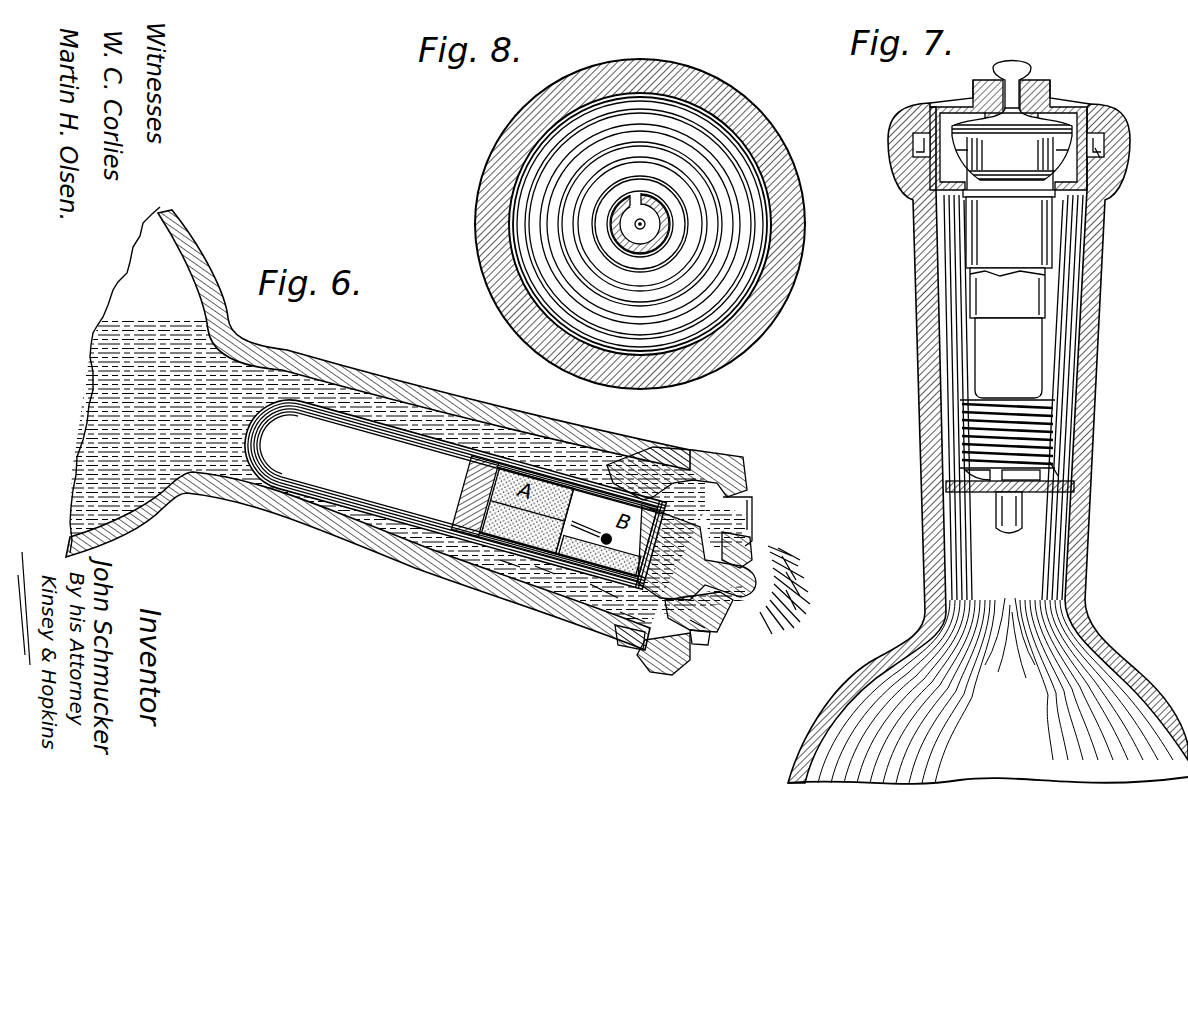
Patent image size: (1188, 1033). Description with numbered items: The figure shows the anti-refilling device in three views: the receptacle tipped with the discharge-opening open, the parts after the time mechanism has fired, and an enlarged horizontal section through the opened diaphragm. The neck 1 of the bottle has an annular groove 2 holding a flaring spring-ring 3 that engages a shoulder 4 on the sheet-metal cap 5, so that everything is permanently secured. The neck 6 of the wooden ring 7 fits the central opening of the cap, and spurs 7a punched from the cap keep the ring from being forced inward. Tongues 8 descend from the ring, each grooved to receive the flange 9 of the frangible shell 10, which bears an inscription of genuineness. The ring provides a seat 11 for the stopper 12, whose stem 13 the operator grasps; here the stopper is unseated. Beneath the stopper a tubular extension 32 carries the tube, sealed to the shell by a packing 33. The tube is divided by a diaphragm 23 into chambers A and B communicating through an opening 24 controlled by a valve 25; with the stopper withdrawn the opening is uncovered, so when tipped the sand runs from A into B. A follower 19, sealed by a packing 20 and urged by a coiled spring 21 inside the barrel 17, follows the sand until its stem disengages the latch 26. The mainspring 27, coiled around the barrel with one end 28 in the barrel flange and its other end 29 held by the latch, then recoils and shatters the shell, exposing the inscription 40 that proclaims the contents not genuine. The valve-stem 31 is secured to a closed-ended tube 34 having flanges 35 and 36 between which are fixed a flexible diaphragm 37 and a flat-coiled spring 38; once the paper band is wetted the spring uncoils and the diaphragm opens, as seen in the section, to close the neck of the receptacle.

In FIG. 8, the neck 1 is at (737, 340).
In FIG. 7, the neck 1 is at (1102, 205).
In FIG. 6, the neck 1 is at (594, 456).
In FIG. 7, the annular groove 2 is at (1106, 150).
In FIG. 6, the annular groove 2 is at (620, 620).
In FIG. 7, the spring-ring 3 is at (1106, 143).
In FIG. 6, the spring-ring 3 is at (658, 657).
In FIG. 7, the shoulder 4 is at (1100, 160).
In FIG. 6, the shoulder 4 is at (690, 624).
In FIG. 6, the cap 5 is at (703, 644).
In FIG. 7, the neck of ring 6 is at (975, 80).
In FIG. 6, the neck of ring 6 is at (753, 540).
In FIG. 7, the ring 7 is at (1088, 104).
In FIG. 6, the ring 7 is at (716, 620).
In FIG. 7, the spurs 7a is at (1115, 112).
In FIG. 6, the spurs 7a is at (632, 642).
In FIG. 7, the tongues 8 is at (930, 213).
In FIG. 6, the tongues 8 is at (632, 468).
In FIG. 7, the flange 9 is at (999, 188).
In FIG. 6, the flange 9 is at (612, 612).
In FIG. 7, the shell 10 is at (1009, 232).
In FIG. 6, the shell 10 is at (454, 478).
In FIG. 7, the seat 11 is at (1040, 118).
In FIG. 6, the seat 11 is at (748, 512).
In FIG. 7, the stopper 12 is at (1004, 138).
In FIG. 6, the stopper 12 is at (697, 552).
In FIG. 7, the stem 13 is at (1016, 68).
In FIG. 6, the stem 13 is at (760, 577).
In FIG. 7, the barrel 17 is at (960, 444).
In FIG. 6, the follower 19 is at (432, 545).
In FIG. 6, the packing 20 is at (456, 555).
In FIG. 6, the coiled spring 21 is at (527, 511).
In FIG. 6, the diaphragm 23 is at (564, 522).
In FIG. 6, the opening 24 is at (588, 521).
In FIG. 6, the valve 25 is at (601, 549).
In FIG. 7, the latch 26 is at (1060, 474).
In FIG. 7, the mainspring 27 is at (1052, 422).
In FIG. 7, the end of mainspring 28 is at (975, 401).
In FIG. 7, the end of mainspring 29 is at (1062, 462).
In FIG. 8, the valve-stem 31 is at (637, 226).
In FIG. 6, the valve-stem 31 is at (516, 572).
In FIG. 7, the tubular extension 32 is at (1007, 293).
In FIG. 6, the tubular extension 32 is at (554, 518).
In FIG. 6, the packing 33 is at (546, 576).
In FIG. 8, the tube 34 is at (626, 250).
In FIG. 7, the tube 34 is at (1006, 524).
In FIG. 7, the flange 35 is at (997, 496).
In FIG. 7, the flange 36 is at (969, 466).
In FIG. 8, the flexible diaphragm 37 is at (630, 343).
In FIG. 7, the flexible diaphragm 37 is at (1090, 481).
In FIG. 8, the spring 38 is at (610, 302).
In FIG. 7, the spring 38 is at (1052, 494).
In FIG. 7, the inscription 40 is at (1022, 348).
In FIG. 6, the inscription 40 is at (383, 467).